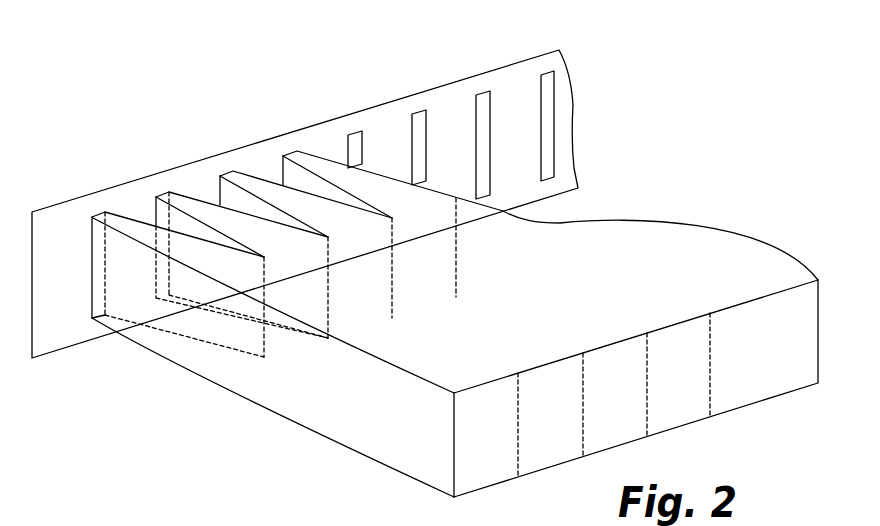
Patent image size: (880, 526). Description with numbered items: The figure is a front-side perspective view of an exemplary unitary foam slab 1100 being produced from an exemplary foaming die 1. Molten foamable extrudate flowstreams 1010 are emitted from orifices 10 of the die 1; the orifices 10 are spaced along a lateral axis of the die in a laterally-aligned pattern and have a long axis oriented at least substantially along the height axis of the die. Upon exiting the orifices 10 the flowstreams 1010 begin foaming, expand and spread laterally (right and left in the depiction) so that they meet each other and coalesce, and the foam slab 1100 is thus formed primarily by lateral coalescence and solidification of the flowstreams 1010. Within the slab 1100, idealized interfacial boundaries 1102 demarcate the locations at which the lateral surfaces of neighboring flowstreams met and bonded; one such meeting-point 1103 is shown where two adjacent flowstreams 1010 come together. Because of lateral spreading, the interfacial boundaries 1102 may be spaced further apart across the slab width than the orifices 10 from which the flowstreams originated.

The die 1 is at (578, 45).
The orifices 10 is at (410, 142).
The molten foamable extrudate flowstreams 1010 is at (122, 222).
The unitary foam slab 1100 is at (380, 452).
The interfacial boundaries 1102 is at (583, 423).
The meeting-point 1103 is at (265, 337).